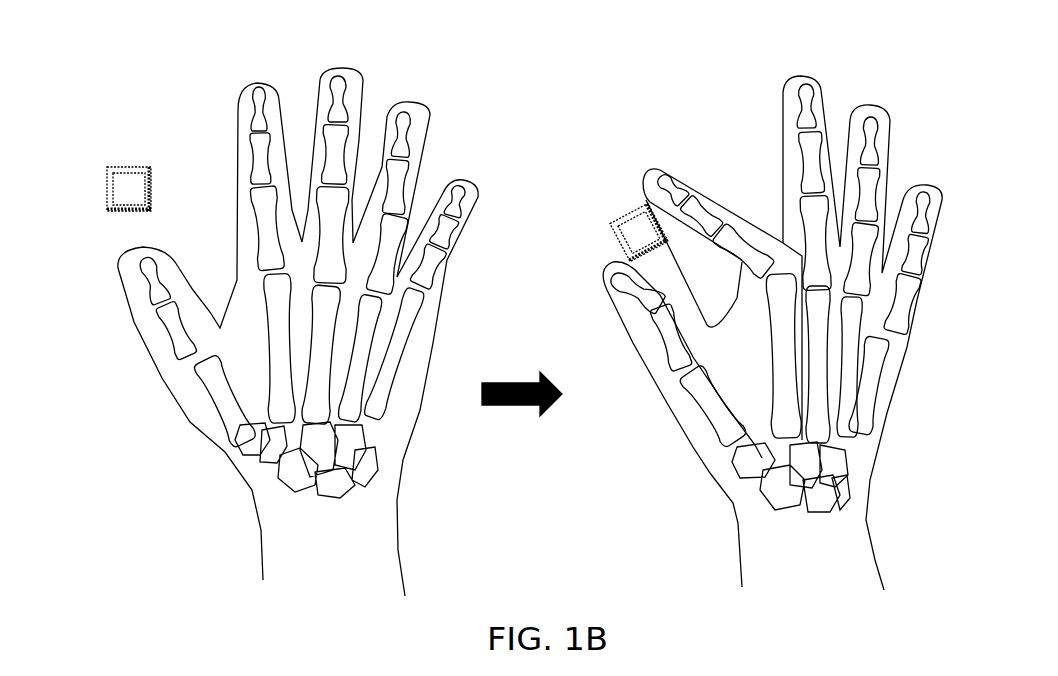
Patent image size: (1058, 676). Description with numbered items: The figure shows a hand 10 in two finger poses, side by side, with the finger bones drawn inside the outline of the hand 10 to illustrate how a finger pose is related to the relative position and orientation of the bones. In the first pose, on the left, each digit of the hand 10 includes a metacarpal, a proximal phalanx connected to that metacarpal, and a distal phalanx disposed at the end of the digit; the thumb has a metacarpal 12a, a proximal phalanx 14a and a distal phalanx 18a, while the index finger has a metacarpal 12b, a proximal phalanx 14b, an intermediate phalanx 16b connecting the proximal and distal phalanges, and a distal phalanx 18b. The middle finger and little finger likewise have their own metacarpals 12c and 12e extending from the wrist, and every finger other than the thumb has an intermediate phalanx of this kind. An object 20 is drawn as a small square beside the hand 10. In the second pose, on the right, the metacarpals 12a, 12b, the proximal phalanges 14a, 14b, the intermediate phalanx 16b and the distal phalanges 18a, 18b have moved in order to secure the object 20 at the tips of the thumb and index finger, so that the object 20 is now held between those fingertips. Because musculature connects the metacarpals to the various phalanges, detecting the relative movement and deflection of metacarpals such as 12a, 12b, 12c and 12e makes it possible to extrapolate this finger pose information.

The hand 10 is at (266, 508).
The metacarpal of the thumb 12a is at (204, 382).
The metacarpal of the index finger 12b is at (281, 386).
The metacarpal of the middle finger 12c is at (314, 412).
The metacarpal of the little finger 12e is at (366, 418).
The proximal phalanx of the thumb 14a is at (181, 328).
The proximal phalanx of the index finger 14b is at (266, 208).
The intermediate phalanx of the index finger 16b is at (262, 159).
The distal phalanx of the thumb 18a is at (152, 283).
The distal phalanx of the index finger 18b is at (256, 103).
The object 20 is at (108, 167).